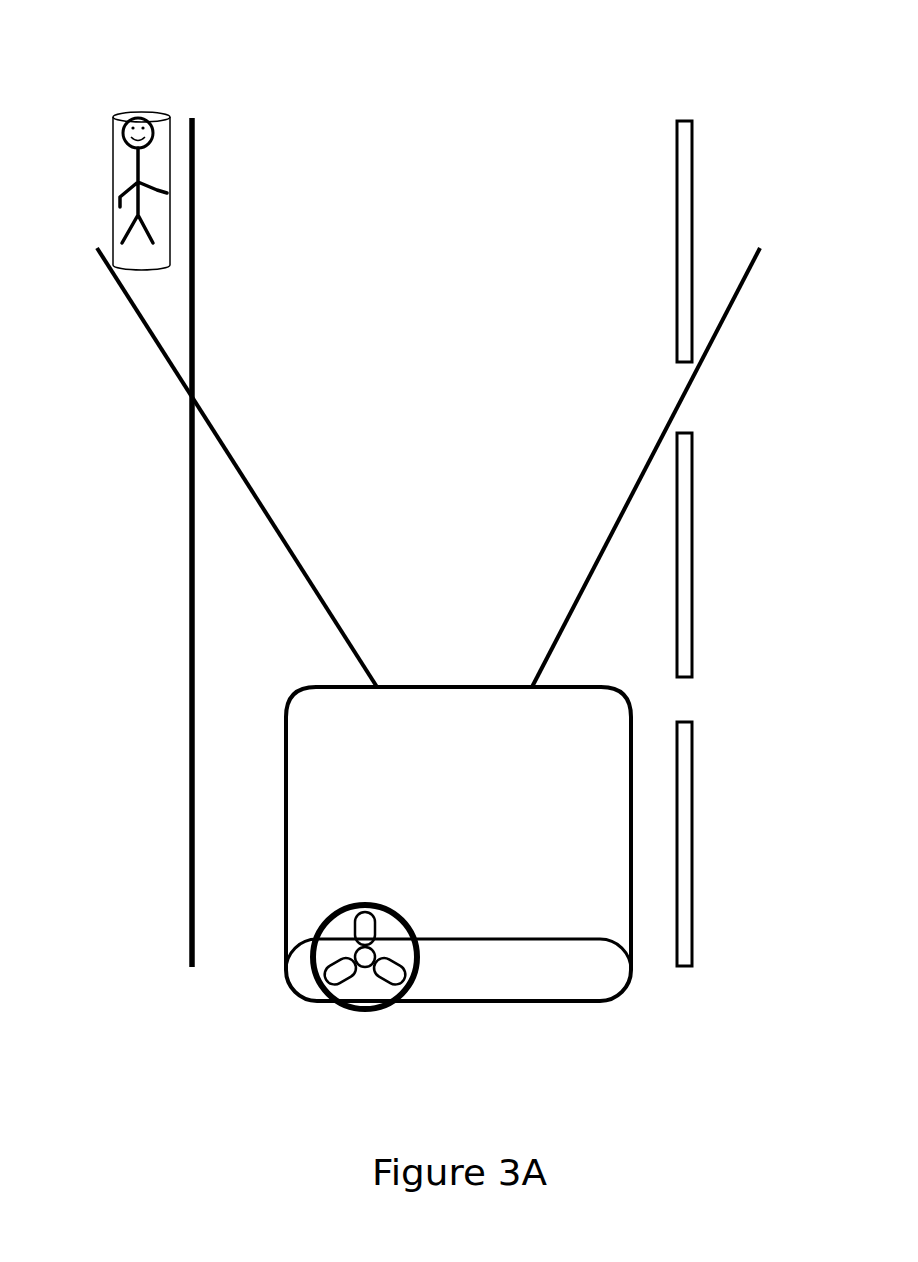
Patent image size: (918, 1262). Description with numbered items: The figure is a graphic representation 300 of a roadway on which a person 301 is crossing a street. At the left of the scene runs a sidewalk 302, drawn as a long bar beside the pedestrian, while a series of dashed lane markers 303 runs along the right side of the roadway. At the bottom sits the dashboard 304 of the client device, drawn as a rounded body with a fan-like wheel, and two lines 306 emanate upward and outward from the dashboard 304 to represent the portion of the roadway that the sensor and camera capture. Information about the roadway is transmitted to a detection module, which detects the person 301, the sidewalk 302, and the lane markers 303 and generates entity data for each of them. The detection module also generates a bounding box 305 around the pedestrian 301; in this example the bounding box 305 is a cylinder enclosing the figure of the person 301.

The graphic representation 300 is at (107, 59).
The person 301 is at (123, 140).
The sidewalk 302 is at (190, 727).
The lane markers 303 is at (692, 245).
The dashboard 304 is at (313, 1002).
The bounding box 305 is at (163, 114).
The lines 306 is at (284, 540).